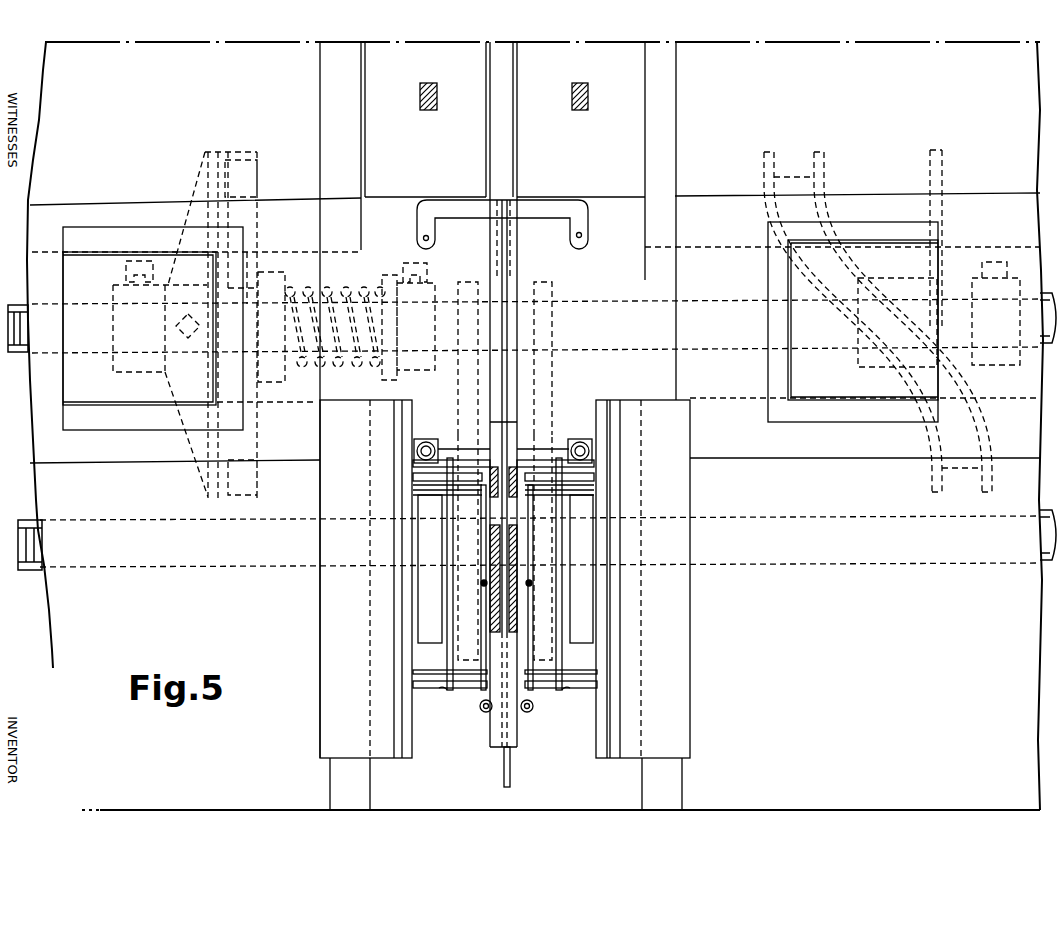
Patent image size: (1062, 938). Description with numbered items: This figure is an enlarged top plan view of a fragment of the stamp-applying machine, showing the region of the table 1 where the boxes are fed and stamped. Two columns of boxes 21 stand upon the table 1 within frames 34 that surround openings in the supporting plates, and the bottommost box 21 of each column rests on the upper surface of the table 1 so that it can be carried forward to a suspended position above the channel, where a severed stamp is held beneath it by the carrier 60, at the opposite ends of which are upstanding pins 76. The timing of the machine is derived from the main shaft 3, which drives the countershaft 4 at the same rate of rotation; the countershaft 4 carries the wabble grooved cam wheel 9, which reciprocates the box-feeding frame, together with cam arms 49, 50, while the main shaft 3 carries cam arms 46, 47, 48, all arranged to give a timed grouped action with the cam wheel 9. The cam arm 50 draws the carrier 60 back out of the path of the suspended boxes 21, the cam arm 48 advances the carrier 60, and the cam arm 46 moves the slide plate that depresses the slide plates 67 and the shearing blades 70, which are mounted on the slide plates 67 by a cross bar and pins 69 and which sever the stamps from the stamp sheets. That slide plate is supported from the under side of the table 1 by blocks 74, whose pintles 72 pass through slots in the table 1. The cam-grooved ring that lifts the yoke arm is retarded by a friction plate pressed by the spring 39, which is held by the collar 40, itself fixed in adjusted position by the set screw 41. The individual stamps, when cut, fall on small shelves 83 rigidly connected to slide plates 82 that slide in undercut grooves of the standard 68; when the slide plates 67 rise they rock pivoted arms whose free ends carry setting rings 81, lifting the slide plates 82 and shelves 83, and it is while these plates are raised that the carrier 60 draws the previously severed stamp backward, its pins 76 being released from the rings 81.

The table 1 is at (77, 72).
The main shaft 3 is at (820, 540).
The countershaft 4 is at (735, 303).
The wabble grooved cam wheel 9 is at (770, 162).
The box 21 is at (88, 270).
The frame 34 is at (150, 422).
The spring 39 is at (341, 363).
The collar 40 is at (416, 368).
The set screw 41 is at (427, 269).
The cam arm 46 is at (463, 388).
The cam arm 47 is at (508, 383).
The cam arm 48 is at (543, 398).
The cam arm 49 is at (466, 662).
The cam arm 50 is at (543, 662).
The carrier 60 is at (535, 212).
The slide plate 67 is at (495, 625).
The standard 68 is at (492, 733).
The pin 69 is at (410, 487).
The blade 70 is at (415, 759).
The pintle 72 is at (437, 86).
The block 74 is at (505, 119).
The upstanding pin 76 is at (424, 236).
The setting ring 81 is at (426, 441).
The slide plate 82 is at (489, 468).
The shelf 83 is at (594, 601).